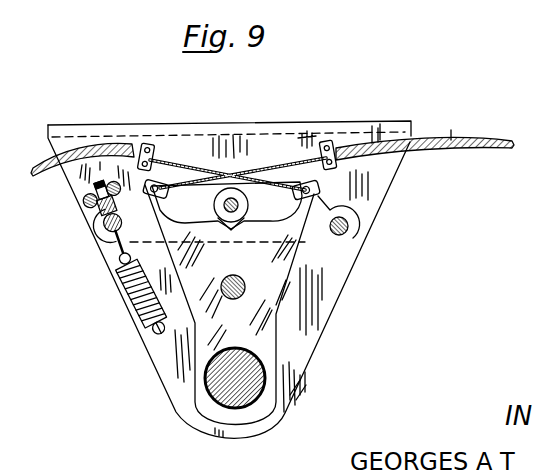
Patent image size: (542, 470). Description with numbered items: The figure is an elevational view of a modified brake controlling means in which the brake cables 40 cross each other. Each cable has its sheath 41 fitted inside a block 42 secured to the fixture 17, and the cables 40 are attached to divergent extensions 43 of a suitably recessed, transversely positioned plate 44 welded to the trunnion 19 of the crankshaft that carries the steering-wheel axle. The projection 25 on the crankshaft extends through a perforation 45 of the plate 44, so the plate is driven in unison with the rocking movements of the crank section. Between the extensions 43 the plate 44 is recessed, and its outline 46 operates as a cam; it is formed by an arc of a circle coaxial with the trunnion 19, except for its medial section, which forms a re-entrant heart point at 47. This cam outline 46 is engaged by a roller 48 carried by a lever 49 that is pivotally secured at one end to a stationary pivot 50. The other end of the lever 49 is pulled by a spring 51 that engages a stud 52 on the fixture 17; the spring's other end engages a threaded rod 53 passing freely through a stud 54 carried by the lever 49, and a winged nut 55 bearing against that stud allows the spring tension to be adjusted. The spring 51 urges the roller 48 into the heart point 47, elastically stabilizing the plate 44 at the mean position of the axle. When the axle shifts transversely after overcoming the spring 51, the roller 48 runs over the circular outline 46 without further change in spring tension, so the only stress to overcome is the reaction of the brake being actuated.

The fixture 17 is at (385, 174).
The trunnion 19 is at (240, 381).
The projection 25 is at (248, 298).
The cables 40 is at (172, 160).
The sheath 41 is at (73, 152).
The block 42 is at (143, 146).
The divergent extensions 43 is at (167, 214).
The transverse plate 44 is at (281, 279).
The perforation 45 is at (240, 279).
The cam outline 46 is at (227, 205).
The re-entrant heart point 47 is at (228, 231).
The roller 48 is at (231, 190).
The lever 49 is at (323, 240).
The stationary pivot 50 is at (350, 229).
The spring 51 is at (133, 293).
The stud 52 is at (151, 336).
The threaded rod 53 is at (119, 253).
The stud 54 is at (97, 240).
The winged nut 55 is at (165, 194).